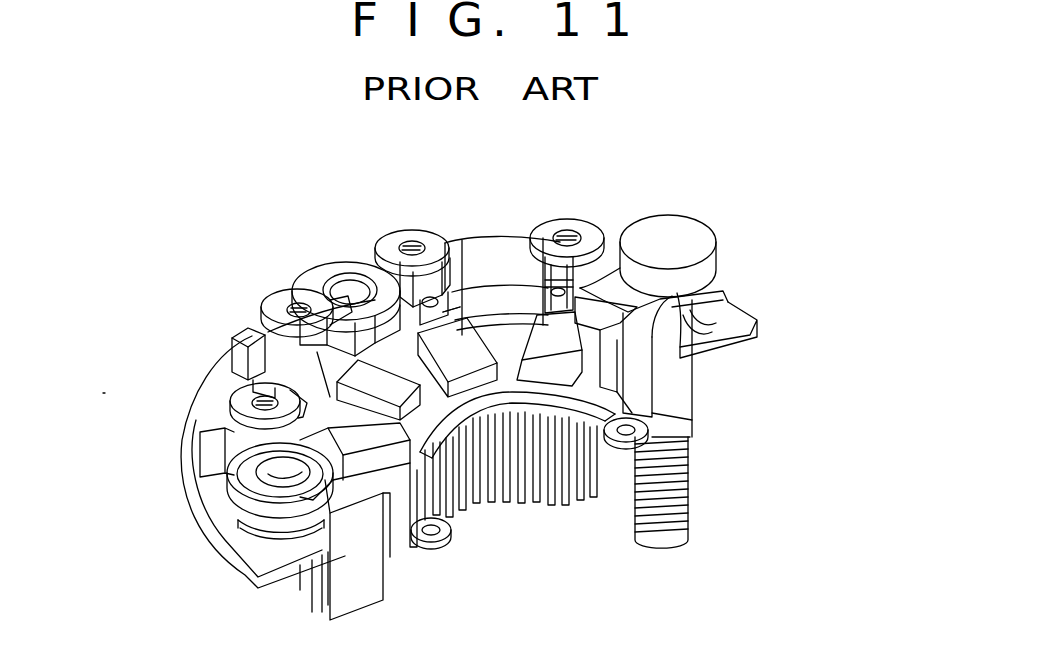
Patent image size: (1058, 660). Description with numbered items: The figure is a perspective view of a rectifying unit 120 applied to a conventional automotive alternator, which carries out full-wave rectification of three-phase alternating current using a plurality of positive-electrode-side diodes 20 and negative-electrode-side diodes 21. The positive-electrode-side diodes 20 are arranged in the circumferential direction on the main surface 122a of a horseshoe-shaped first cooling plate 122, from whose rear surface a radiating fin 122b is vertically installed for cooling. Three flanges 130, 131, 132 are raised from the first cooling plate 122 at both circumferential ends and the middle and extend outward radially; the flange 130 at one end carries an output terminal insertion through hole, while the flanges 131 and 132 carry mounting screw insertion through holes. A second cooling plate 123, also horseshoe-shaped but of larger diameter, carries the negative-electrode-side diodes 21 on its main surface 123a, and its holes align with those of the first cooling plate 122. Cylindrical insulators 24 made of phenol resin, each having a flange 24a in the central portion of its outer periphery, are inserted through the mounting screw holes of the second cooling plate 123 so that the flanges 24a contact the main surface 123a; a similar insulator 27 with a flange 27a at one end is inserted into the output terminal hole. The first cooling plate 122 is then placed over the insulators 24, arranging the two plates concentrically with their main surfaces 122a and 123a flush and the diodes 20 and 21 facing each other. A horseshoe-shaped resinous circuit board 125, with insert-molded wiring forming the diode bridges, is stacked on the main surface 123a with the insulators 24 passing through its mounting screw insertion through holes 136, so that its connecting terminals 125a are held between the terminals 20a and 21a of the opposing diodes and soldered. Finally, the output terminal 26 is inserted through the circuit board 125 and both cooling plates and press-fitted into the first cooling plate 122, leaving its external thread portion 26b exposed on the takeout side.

The rectifying unit 120 is at (202, 274).
The second cooling plate 123 is at (183, 402).
The main surface 123a is at (202, 420).
The negative-electrode-side diode 21 is at (230, 340).
The mounting screw insertion through hole 136 is at (343, 287).
The flange 131 is at (400, 330).
The circuit board 125 is at (455, 244).
The positive-electrode-side diode 20 is at (460, 335).
The first cooling plate 122 is at (507, 342).
The main surface 122a is at (581, 395).
The radiating fin 122b is at (537, 503).
The connecting terminal 125a is at (560, 223).
The terminal 21a is at (562, 272).
The terminal 20a is at (600, 272).
The output terminal 26 is at (705, 219).
The insulator 27 is at (713, 322).
The flange 27a is at (700, 332).
The flange 130 is at (692, 389).
The external thread portion 26b is at (690, 478).
The insulator 24 is at (243, 533).
The flange 24a is at (260, 540).
The flange 132 is at (333, 513).